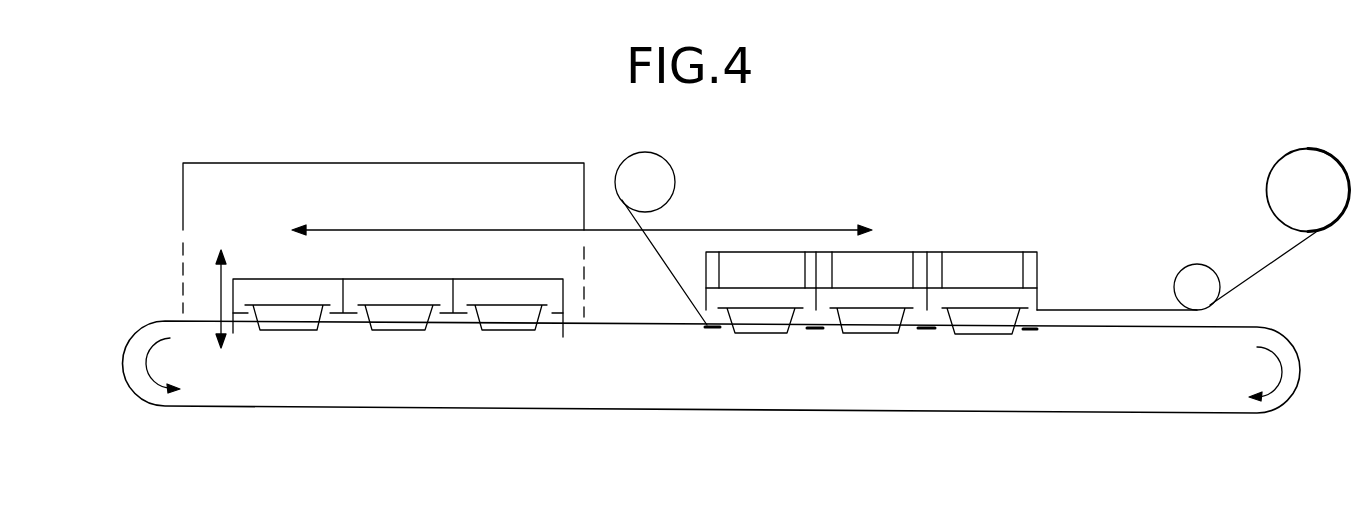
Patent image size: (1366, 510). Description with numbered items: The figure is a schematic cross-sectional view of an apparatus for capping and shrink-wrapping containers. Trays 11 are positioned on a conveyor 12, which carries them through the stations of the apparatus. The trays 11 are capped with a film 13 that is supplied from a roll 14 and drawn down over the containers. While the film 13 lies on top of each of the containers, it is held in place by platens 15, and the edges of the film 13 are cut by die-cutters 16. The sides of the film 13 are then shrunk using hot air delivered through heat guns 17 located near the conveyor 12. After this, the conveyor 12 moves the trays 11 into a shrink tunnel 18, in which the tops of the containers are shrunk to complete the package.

The tray 11 is at (740, 338).
The conveyor 12 is at (1138, 413).
The film 13 is at (1282, 262).
The roll 14 is at (1287, 163).
The platen 15 is at (772, 280).
The die-cutter 16 is at (927, 300).
The heat gun 17 is at (713, 331).
The shrink tunnel 18 is at (405, 163).